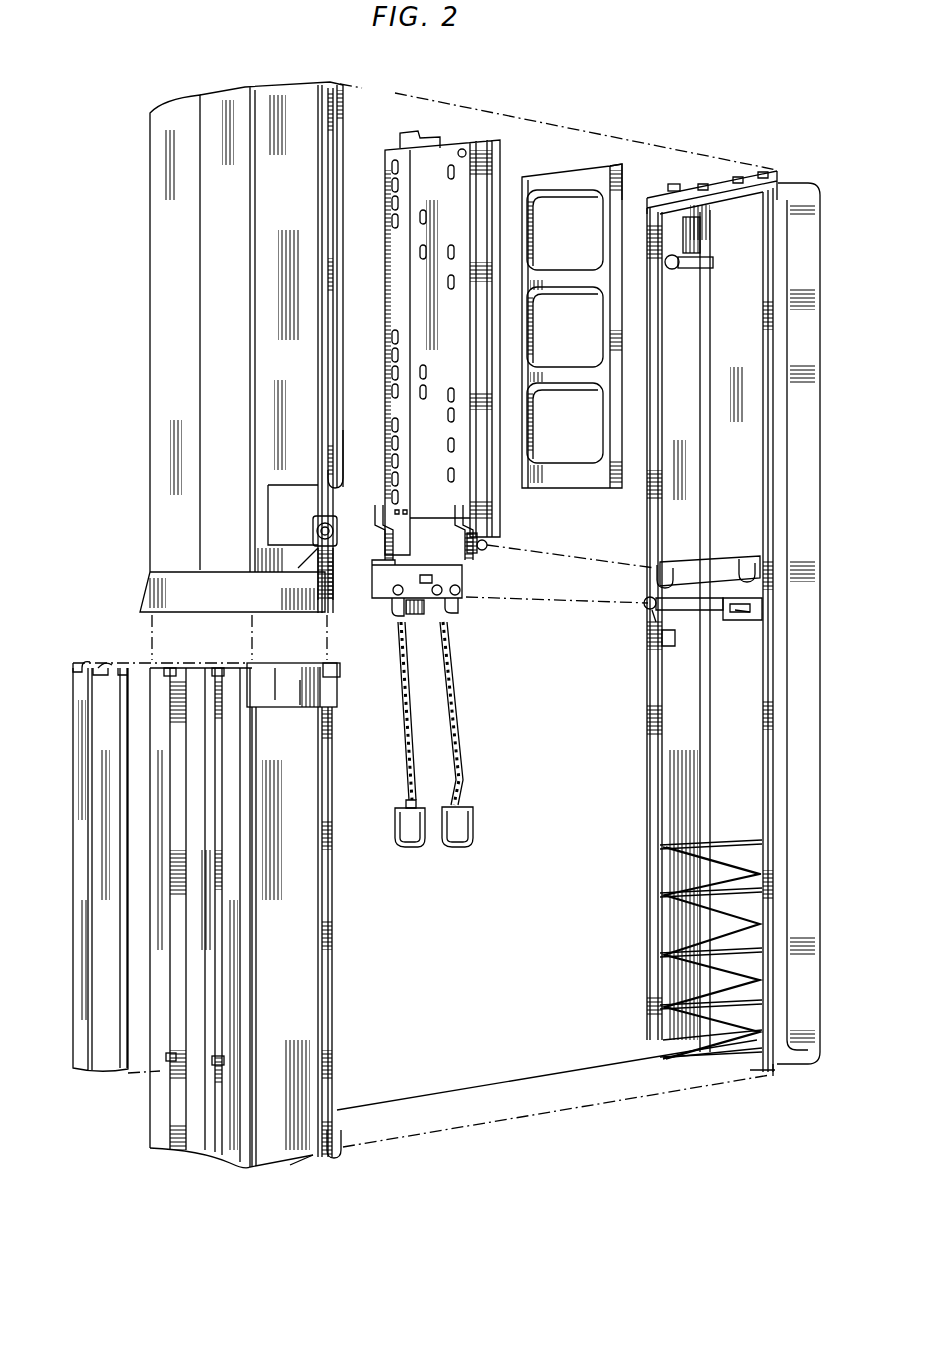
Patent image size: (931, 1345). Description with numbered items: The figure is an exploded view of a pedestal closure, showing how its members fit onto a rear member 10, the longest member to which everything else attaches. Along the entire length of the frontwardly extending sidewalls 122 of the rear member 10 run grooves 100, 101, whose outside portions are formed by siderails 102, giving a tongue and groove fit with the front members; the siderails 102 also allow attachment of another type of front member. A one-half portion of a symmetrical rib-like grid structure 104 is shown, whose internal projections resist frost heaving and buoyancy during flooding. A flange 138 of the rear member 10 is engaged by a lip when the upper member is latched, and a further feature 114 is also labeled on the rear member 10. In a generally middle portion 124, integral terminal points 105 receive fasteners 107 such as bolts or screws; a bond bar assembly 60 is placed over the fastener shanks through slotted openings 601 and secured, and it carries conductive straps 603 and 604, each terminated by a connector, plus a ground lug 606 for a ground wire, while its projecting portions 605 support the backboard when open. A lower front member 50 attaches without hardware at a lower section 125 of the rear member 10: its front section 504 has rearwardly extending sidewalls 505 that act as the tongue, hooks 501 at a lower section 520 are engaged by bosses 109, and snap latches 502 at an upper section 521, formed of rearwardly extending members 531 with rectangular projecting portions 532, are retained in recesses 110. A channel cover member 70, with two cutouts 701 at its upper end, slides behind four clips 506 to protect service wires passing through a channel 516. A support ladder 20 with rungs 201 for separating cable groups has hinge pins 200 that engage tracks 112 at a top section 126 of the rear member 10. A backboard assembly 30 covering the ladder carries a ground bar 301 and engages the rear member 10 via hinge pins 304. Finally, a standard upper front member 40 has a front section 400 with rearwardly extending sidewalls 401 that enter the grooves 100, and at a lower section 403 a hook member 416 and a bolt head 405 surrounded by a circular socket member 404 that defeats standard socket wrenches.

The rear member 10 is at (727, 176).
The support ladder 20 is at (562, 172).
The backboard assembly 30 is at (428, 140).
The standard upper front member 40 is at (240, 107).
The lower front member 50 is at (315, 808).
The bond bar assembly 60 is at (420, 580).
The channel cover member 70 is at (105, 670).
The groove 100 is at (768, 370).
The groove 101 is at (660, 338).
The siderail 102 is at (779, 194).
The rib-like grid structure 104 is at (660, 570).
The terminal point 105 is at (652, 618).
The fastener 107 is at (646, 606).
The projecting member 109 is at (765, 1072).
The recess 110 is at (668, 646).
The track 112 is at (692, 262).
The hook 114 is at (750, 560).
The sidewall 122 is at (806, 380).
The middle portion 124 is at (800, 570).
The lower section 125 is at (810, 952).
The top section 126 is at (810, 302).
The flange 138 is at (674, 184).
The hinge pin 200 is at (628, 180).
The rung 201 is at (548, 268).
The ground bar 301 is at (395, 253).
The hinge pin 304 is at (488, 544).
The front section 400 is at (200, 270).
The sidewall 401 is at (340, 120).
The lower section 403 is at (322, 582).
The socket member 404 is at (334, 522).
The bolt head 405 is at (312, 552).
The hook member 416 is at (345, 470).
The hook 501 is at (337, 1146).
The snap latch 502 is at (328, 692).
The front section 504 is at (236, 665).
The sidewall 505 is at (320, 990).
The clip 506 is at (215, 668).
The channel 516 is at (208, 920).
The lower section 520 is at (292, 1166).
The upper section 521 is at (290, 672).
The rearwardly extending member 531 is at (305, 708).
The projecting portion 532 is at (340, 672).
The slotted opening 601 is at (394, 604).
The conductive strap 603 is at (408, 776).
The conductive strap 604 is at (455, 775).
The projecting portion 605 is at (378, 568).
The ground lug 606 is at (410, 616).
The cutout 701 is at (100, 663).